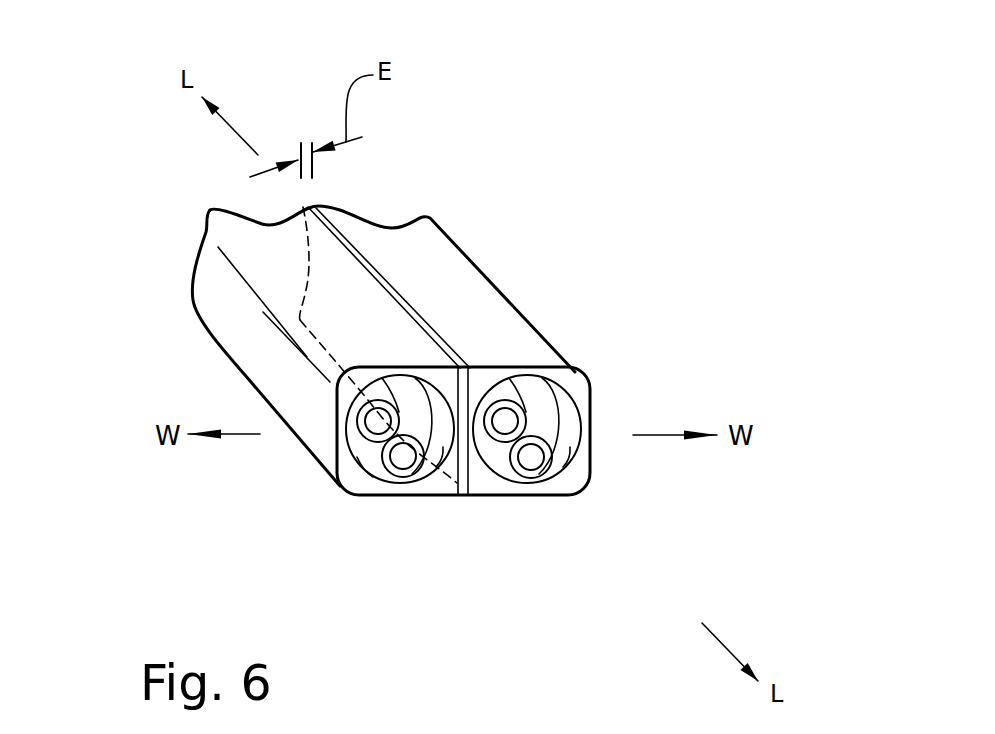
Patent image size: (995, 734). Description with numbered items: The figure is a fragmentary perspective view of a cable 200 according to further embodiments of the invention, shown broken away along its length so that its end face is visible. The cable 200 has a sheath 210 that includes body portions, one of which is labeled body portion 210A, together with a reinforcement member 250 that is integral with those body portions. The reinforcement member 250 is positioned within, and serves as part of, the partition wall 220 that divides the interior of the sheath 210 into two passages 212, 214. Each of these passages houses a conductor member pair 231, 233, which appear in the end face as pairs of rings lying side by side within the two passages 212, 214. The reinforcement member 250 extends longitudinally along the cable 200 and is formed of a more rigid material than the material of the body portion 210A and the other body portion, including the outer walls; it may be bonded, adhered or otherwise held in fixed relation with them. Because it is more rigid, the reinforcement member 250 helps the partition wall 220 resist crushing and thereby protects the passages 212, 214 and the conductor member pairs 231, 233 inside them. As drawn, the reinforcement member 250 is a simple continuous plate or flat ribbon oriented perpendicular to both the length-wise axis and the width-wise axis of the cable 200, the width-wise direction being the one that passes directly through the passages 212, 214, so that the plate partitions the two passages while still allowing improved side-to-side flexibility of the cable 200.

The cable 200 is at (538, 197).
The sheath 210 is at (498, 282).
The body portion 210A is at (320, 363).
The reinforcement member 250 is at (372, 267).
The passage 212 is at (437, 458).
The passage 214 is at (551, 476).
The partition wall 220 is at (475, 468).
The conductor member pair 231 is at (368, 453).
The conductor member pair 233 is at (553, 480).